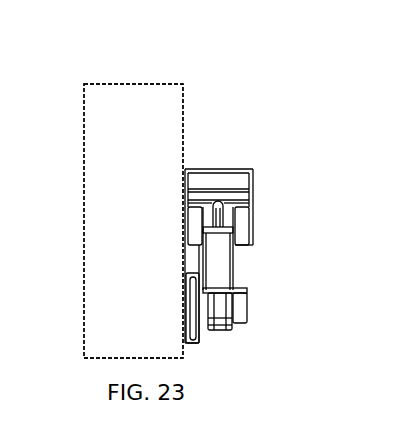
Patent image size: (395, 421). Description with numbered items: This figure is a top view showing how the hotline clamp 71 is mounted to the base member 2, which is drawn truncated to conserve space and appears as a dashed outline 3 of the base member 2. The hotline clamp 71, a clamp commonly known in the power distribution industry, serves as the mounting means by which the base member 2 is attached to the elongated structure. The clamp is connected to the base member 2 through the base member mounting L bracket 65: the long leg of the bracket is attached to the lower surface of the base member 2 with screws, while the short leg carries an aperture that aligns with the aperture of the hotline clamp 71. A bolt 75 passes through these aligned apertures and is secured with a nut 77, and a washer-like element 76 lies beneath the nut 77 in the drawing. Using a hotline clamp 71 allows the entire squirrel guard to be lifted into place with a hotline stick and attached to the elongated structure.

The base member 2 is at (137, 83).
The body 3 is at (112, 137).
The hotline clamp 71 is at (218, 186).
The nut 77 is at (248, 290).
The bolt 75 is at (248, 310).
The block 76 is at (231, 329).
The base member mounting L bracket 65 is at (197, 343).